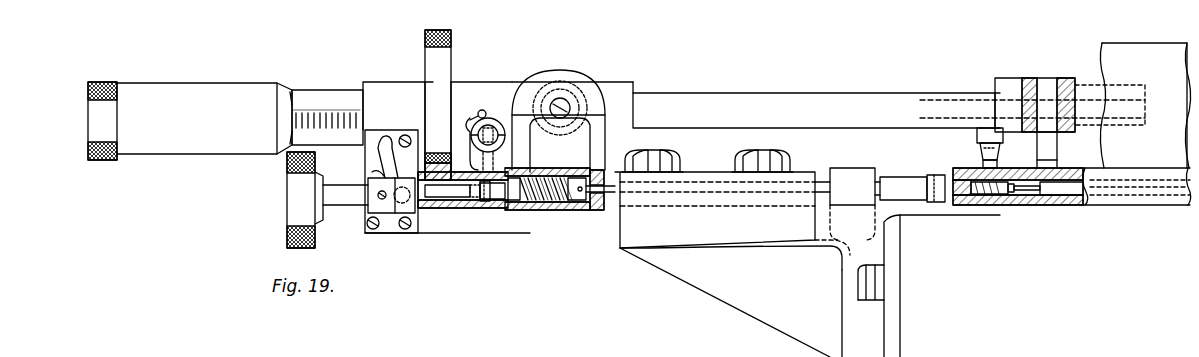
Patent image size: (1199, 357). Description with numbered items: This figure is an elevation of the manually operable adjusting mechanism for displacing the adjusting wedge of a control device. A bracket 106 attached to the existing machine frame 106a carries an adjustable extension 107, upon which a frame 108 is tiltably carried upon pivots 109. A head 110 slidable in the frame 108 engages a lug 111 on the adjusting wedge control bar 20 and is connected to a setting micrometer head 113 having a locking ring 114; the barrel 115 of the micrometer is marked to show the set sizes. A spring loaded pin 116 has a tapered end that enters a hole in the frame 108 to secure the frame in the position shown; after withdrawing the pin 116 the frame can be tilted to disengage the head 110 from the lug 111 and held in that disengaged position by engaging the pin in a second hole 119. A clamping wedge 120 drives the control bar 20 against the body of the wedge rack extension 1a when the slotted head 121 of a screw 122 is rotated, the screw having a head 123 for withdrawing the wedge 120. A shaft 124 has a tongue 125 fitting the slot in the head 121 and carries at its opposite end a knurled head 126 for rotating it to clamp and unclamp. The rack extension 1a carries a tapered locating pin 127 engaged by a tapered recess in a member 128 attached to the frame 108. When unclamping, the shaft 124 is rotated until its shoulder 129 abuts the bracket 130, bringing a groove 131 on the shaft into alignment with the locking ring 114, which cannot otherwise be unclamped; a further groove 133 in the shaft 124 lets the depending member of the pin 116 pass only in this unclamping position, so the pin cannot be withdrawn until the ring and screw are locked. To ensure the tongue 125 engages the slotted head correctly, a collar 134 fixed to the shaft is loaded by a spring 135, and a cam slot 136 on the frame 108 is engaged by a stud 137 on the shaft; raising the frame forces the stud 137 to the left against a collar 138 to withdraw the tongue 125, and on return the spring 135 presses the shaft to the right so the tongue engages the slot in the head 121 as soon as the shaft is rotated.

The setting micrometer head 113 is at (237, 95).
The barrel 115 is at (330, 92).
The locking ring 114 is at (434, 46).
The second hole 119 is at (480, 110).
The spring loaded pin 116 is at (490, 118).
The pivots 109 is at (562, 104).
The frame 108 is at (860, 103).
The head 110 is at (1030, 79).
The lug 111 is at (1047, 95).
The cam slot 136 is at (385, 160).
The knurled head 126 is at (298, 206).
The collar 138 is at (373, 214).
The stud 137 is at (415, 215).
The groove 131 is at (445, 208).
The groove 133 is at (490, 207).
The spring 135 is at (540, 210).
The collar 134 is at (592, 212).
The adjustable extension 107 is at (605, 210).
The shaft 124 is at (722, 185).
The bracket 130 is at (852, 176).
The shoulder 129 is at (906, 182).
The member 128 is at (978, 137).
The tapered locating pin 127 is at (980, 156).
The tongue 125 is at (937, 205).
The slotted head 121 is at (950, 207).
The screw 122 is at (990, 197).
The head 123 is at (1008, 200).
The clamping wedge 120 is at (1040, 196).
The wedge rack extension 1a is at (1097, 200).
The adjusting wedge control bar 20 is at (1153, 195).
The bracket 106 is at (742, 300).
The machine frame 106a is at (906, 320).